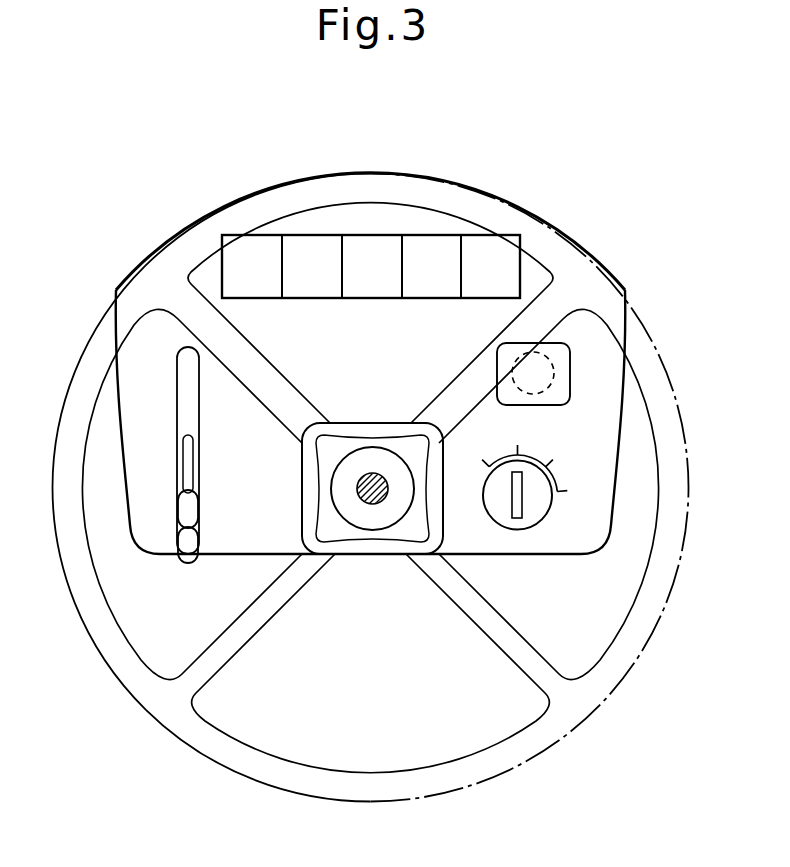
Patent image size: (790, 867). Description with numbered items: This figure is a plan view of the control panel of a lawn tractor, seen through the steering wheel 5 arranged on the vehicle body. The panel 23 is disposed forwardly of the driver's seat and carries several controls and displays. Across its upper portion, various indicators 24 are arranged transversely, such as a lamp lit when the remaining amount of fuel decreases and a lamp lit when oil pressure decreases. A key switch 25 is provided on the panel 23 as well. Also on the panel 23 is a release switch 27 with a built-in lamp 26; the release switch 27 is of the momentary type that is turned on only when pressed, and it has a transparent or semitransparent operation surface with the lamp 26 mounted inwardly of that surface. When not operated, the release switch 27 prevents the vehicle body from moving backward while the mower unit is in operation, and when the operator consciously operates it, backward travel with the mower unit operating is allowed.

The steering wheel 5 is at (151, 717).
The panel 23 is at (241, 520).
The indicators 24 is at (358, 233).
The key switch 25 is at (532, 509).
The lamp 26 is at (549, 389).
The release switch 27 is at (497, 368).